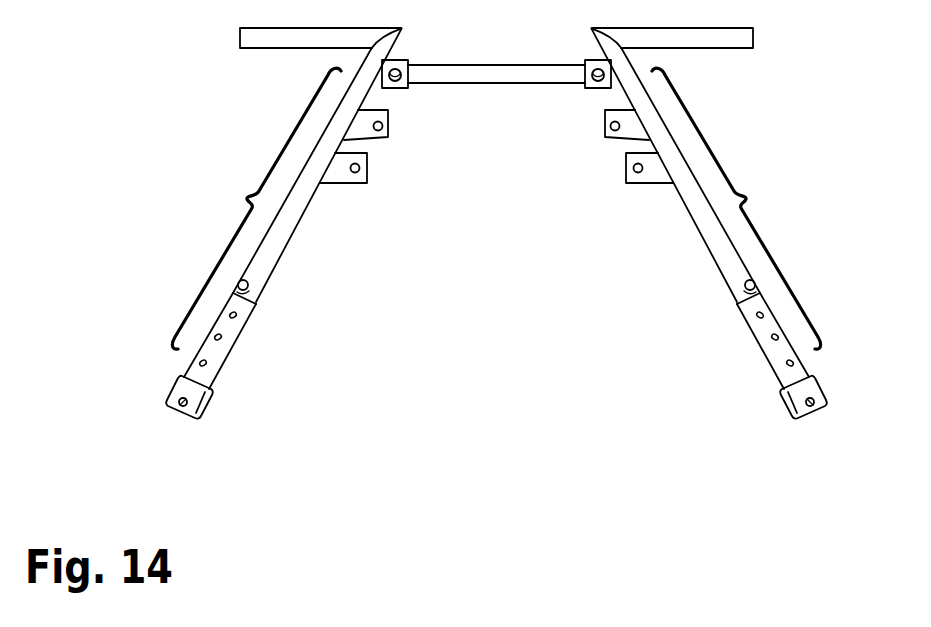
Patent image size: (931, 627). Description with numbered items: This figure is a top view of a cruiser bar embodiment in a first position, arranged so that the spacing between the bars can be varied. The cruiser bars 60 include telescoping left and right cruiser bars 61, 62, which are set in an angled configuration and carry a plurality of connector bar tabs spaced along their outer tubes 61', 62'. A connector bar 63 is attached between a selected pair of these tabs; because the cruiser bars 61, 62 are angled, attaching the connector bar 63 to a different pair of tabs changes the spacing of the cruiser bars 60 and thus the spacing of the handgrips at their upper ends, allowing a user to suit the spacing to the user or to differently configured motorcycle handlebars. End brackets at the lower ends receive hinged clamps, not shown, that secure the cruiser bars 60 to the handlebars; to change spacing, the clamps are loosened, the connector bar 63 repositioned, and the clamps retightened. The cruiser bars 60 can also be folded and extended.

The cruiser bars 60 is at (555, 288).
The left cruiser bar 61 is at (736, 208).
The outer tube 61' is at (700, 208).
The right cruiser bar 62 is at (256, 208).
The outer tube 62' is at (293, 208).
The connector bar 63 is at (500, 77).